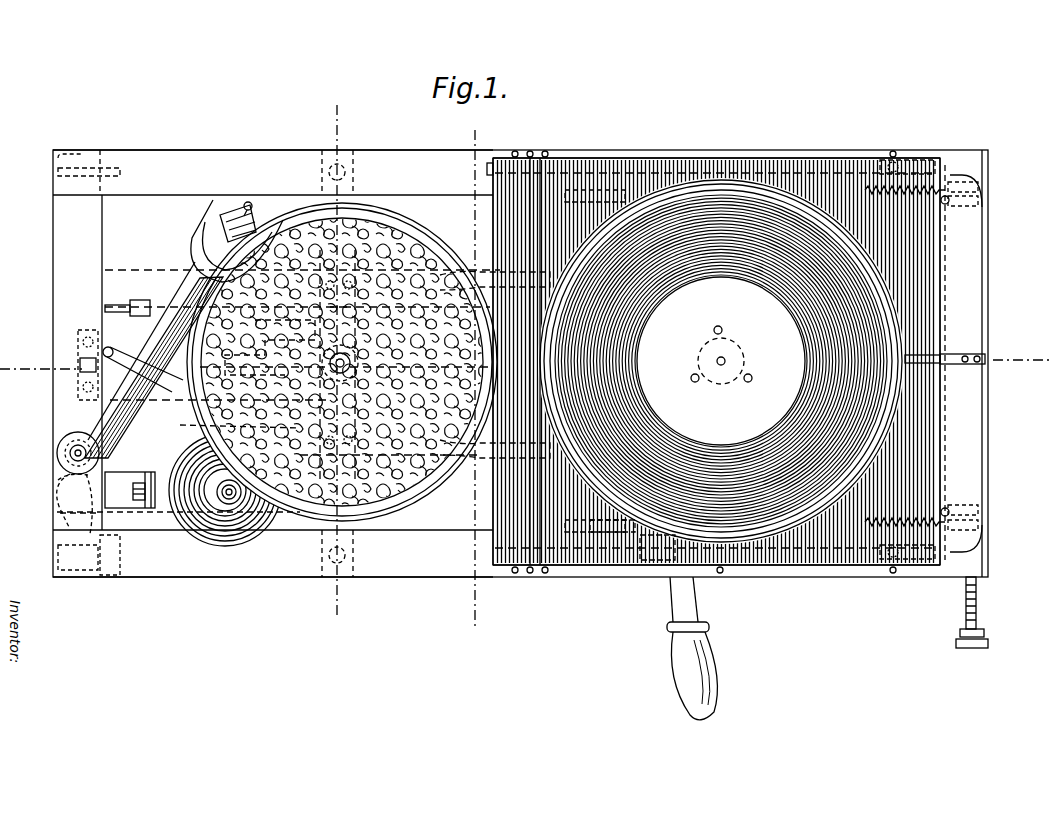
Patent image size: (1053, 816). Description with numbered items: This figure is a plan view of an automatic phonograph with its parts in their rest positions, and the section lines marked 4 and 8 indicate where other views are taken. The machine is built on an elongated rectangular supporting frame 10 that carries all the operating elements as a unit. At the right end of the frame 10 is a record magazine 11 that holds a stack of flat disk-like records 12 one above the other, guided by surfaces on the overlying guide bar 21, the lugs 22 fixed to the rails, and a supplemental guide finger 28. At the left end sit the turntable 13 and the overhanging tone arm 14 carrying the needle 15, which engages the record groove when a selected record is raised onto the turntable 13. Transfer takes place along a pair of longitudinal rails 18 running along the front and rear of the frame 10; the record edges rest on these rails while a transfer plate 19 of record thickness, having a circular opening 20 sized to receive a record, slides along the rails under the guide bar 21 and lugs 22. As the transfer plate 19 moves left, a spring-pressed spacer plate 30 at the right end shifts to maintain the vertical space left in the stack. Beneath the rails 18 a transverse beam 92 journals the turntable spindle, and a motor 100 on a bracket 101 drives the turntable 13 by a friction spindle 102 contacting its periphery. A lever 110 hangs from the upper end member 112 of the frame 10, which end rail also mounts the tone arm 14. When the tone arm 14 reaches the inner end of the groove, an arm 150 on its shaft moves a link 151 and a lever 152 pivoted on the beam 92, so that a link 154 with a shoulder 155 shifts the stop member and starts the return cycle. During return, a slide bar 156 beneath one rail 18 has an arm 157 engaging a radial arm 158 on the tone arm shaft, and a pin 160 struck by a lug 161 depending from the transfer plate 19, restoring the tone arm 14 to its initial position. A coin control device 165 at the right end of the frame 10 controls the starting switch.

The section line 4- 4 is at (34, 356).
The section line 8- 8 is at (486, 134).
The supporting frame 10 is at (345, 110).
The record magazine 11 is at (790, 215).
The records 12 is at (735, 200).
The turntable 13 is at (296, 248).
The tone arm 14 is at (192, 282).
The needle 15 is at (688, 677).
The longitudinal rails 18 is at (393, 170).
The transfer plate 19 is at (855, 540).
The circular opening 20 is at (800, 522).
The guide bar 21 is at (540, 178).
The lugs 22 is at (720, 168).
The guide finger 28 is at (965, 355).
The spacer plate 30 is at (960, 267).
The transverse beam 92 is at (395, 524).
The motor 100 is at (200, 528).
The bracket 101 is at (128, 480).
The friction spindle 102 is at (233, 505).
The lever 110 is at (78, 372).
The upper end member 112 is at (64, 307).
The arm 150 is at (70, 410).
The link 151 is at (180, 376).
The lever 152 is at (200, 426).
The link 154 is at (115, 304).
The shoulder 155 is at (150, 322).
The slide bar 156 is at (308, 555).
The arm 157 is at (60, 513).
The radial arm 158 is at (60, 480).
The pin 160 is at (642, 545).
The lug 161 is at (617, 530).
The coin control device 165 is at (952, 590).